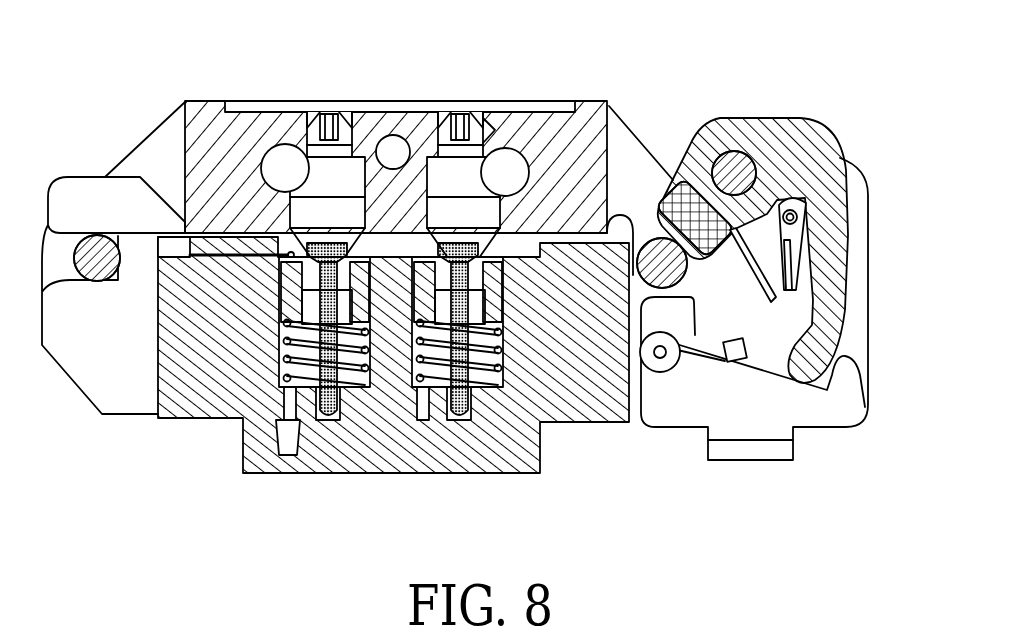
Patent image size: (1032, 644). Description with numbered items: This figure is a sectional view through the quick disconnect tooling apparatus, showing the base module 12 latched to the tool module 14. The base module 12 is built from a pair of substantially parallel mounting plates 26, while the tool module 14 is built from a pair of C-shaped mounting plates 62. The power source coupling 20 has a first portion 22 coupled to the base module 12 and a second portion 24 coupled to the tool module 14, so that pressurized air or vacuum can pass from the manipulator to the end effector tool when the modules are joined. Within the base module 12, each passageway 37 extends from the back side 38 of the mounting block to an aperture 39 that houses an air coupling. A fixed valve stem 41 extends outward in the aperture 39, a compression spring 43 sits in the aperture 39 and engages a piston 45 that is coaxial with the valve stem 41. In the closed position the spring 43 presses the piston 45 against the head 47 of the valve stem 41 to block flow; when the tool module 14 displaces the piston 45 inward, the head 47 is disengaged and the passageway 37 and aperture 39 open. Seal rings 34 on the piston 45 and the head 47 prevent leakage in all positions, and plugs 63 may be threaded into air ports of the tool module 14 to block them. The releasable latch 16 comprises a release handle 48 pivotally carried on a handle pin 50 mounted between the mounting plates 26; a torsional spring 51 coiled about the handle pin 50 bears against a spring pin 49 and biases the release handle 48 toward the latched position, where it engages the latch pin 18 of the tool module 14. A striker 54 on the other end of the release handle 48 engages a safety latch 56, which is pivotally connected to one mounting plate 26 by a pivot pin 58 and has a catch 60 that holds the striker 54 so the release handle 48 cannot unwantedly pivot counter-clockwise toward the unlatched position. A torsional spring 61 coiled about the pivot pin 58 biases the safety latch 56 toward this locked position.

The base module 12 is at (97, 415).
The tool module 14 is at (587, 101).
The latch 16 is at (749, 103).
The latch pin 18 is at (654, 243).
The power source coupling 20 is at (309, 101).
The first portion 22 is at (280, 381).
The second portion 24 is at (356, 111).
The mounting plates 26 is at (72, 352).
The seal rings 34 is at (480, 250).
The passageway 37 is at (290, 422).
The back side 38 is at (527, 475).
The aperture 39 is at (406, 382).
The valve stem 41 is at (321, 402).
The compression spring 43 is at (364, 382).
The piston 45 is at (462, 400).
The head 47 is at (322, 240).
The release handle 48 is at (795, 122).
The spring pin 49 is at (843, 170).
The handle pin 50 is at (726, 156).
The torsional spring 51 is at (787, 272).
The striker 54 is at (815, 349).
The safety latch 56 is at (846, 416).
The pivot pin 58 is at (671, 362).
The catch 60 is at (852, 381).
The torsional spring 61 is at (640, 300).
The mounting plates 62 is at (152, 154).
The plugs 63 is at (487, 118).